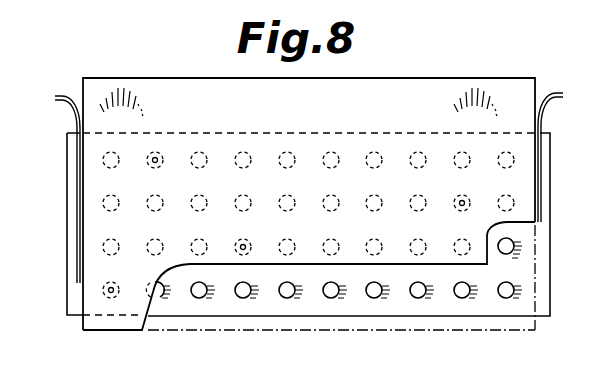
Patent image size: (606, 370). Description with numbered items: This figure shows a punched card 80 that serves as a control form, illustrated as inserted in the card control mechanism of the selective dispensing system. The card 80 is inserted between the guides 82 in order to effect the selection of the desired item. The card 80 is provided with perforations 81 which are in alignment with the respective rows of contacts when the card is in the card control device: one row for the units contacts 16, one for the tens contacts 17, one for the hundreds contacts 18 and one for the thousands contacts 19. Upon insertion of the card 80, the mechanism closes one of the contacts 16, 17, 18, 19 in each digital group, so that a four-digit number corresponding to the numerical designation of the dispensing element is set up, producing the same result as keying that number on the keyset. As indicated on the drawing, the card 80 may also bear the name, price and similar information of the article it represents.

The card 80 is at (507, 85).
The guides 82 is at (57, 96).
The units contacts 16 is at (504, 153).
The tens contacts 17 is at (502, 198).
The hundreds contacts 18 is at (505, 239).
The thousands contacts 19 is at (418, 298).
The perforations 81 is at (112, 287).